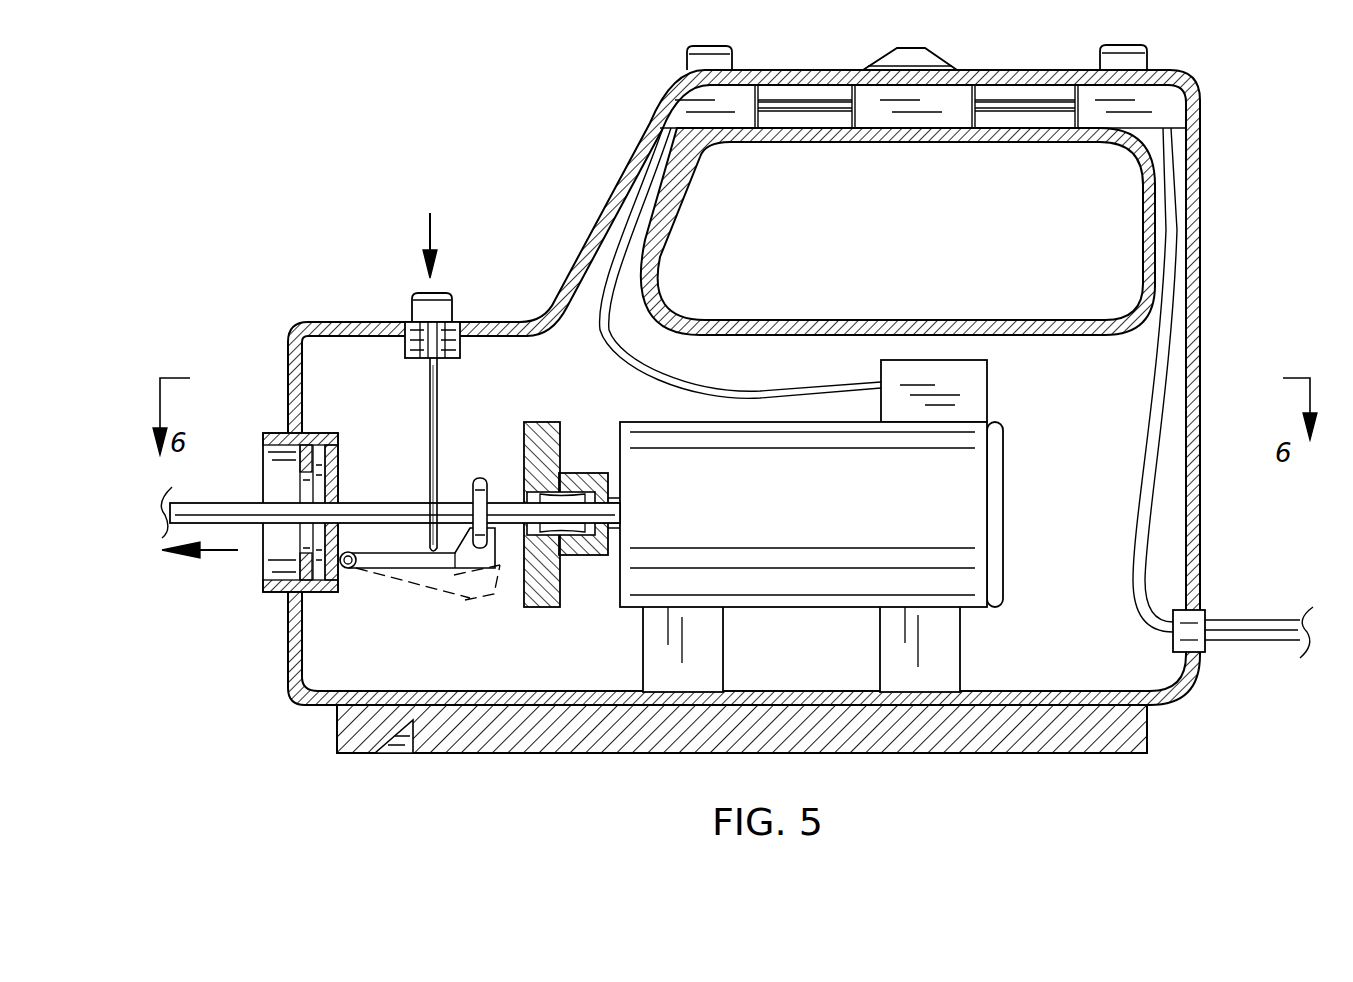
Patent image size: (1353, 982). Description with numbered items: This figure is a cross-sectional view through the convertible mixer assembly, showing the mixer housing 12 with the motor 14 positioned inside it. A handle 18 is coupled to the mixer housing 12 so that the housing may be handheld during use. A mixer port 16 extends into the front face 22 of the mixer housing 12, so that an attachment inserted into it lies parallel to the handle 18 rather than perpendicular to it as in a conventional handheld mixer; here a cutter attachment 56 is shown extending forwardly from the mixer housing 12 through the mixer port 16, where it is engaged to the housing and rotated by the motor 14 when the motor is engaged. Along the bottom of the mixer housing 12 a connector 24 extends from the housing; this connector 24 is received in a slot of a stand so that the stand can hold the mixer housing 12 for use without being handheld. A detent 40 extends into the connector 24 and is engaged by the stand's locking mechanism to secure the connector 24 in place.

The mixer housing 12 is at (1162, 665).
The motor 14 is at (805, 478).
The mixer port 16 is at (262, 553).
The handle 18 is at (773, 70).
The front face 22 is at (287, 380).
The connector 24 is at (1077, 753).
The detent 40 is at (397, 753).
The cutter attachment 56 is at (213, 510).